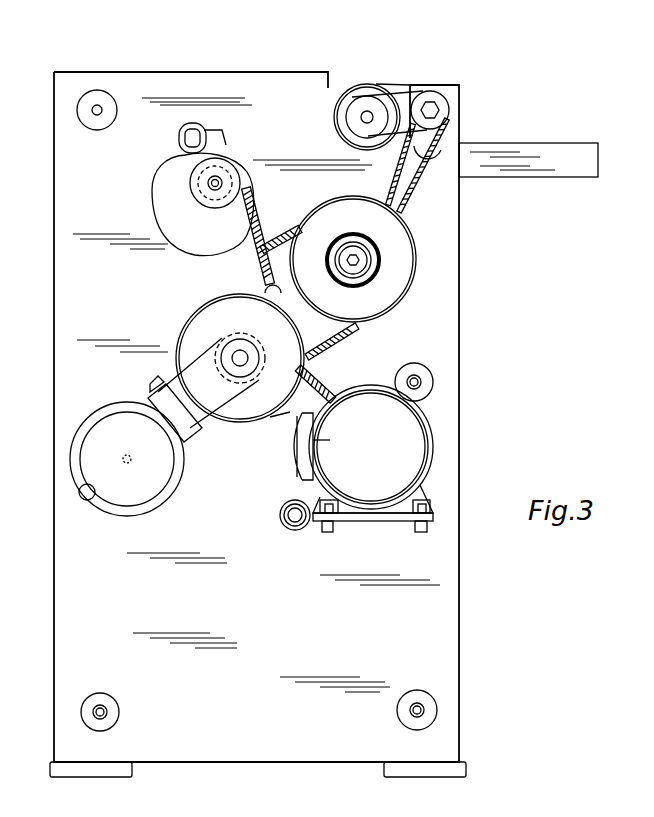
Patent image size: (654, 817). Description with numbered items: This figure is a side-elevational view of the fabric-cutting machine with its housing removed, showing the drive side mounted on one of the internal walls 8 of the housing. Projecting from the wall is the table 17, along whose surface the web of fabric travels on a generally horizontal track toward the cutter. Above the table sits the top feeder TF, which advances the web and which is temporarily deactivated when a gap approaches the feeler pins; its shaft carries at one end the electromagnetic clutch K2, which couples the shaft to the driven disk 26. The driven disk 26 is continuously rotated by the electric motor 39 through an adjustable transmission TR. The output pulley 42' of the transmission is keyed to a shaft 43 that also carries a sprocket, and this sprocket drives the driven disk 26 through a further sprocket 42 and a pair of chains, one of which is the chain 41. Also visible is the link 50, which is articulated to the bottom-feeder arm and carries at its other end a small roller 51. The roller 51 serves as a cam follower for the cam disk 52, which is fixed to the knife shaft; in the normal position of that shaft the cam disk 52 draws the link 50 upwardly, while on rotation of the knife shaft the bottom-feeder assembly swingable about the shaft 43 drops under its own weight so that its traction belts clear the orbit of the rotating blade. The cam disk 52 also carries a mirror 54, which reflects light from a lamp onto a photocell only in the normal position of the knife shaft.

The internal wall 8 is at (451, 290).
The table 17 is at (560, 151).
The driven disk 26 is at (366, 116).
The electromagnetic clutch K2 is at (356, 92).
The top feeder TF is at (394, 66).
The sprocket 42 is at (456, 115).
The chain 41 is at (427, 192).
The output pulley 42' is at (358, 268).
The shaft 43 is at (358, 253).
The small roller 51 is at (200, 131).
The cam disk 52 is at (160, 228).
The mirror 54 is at (202, 204).
The link 50 is at (258, 212).
The adjustable transmission TR is at (290, 278).
The electric motor 39 is at (410, 439).